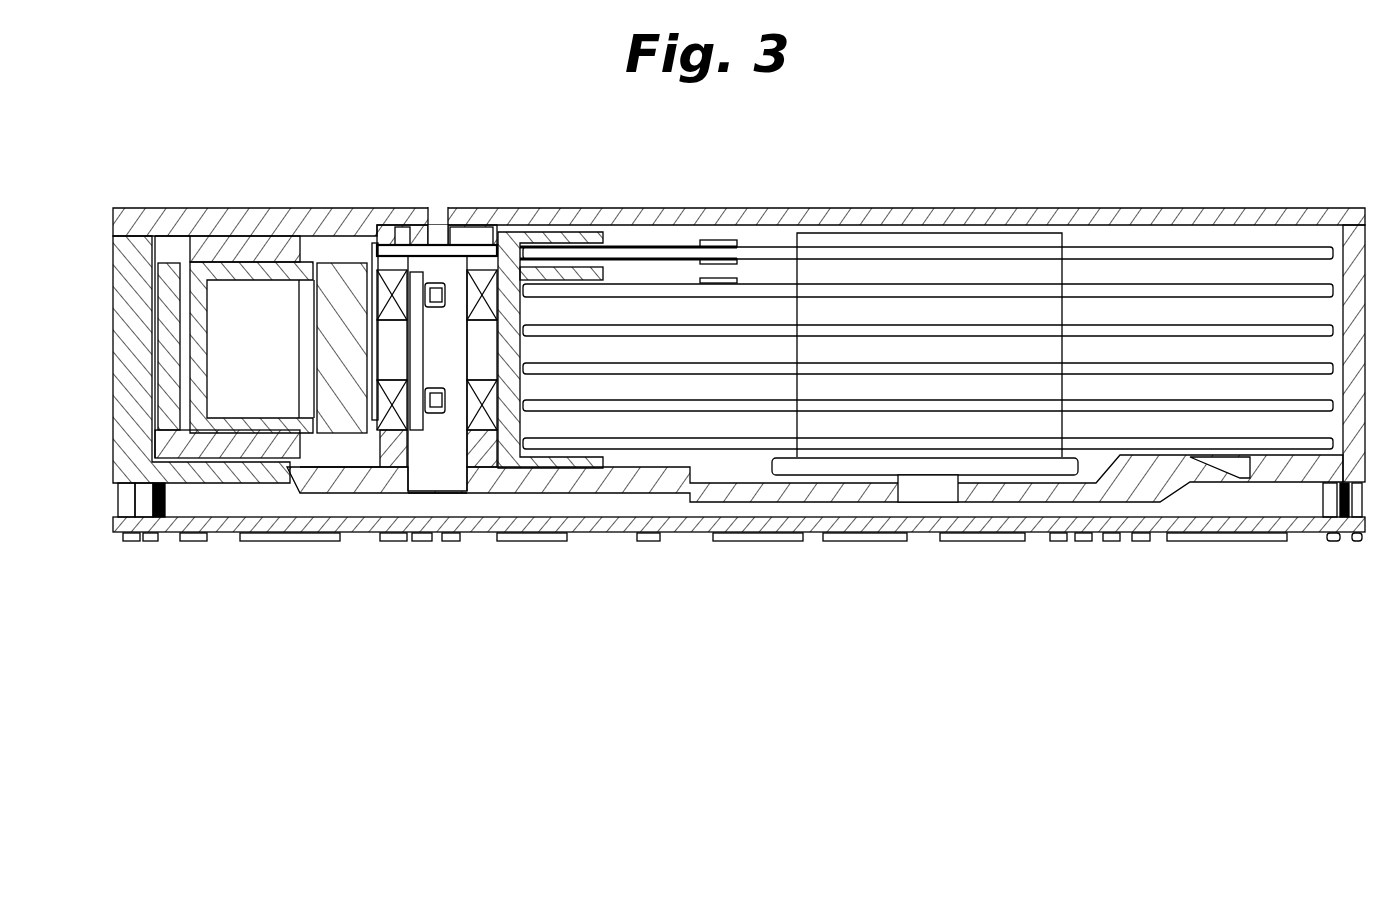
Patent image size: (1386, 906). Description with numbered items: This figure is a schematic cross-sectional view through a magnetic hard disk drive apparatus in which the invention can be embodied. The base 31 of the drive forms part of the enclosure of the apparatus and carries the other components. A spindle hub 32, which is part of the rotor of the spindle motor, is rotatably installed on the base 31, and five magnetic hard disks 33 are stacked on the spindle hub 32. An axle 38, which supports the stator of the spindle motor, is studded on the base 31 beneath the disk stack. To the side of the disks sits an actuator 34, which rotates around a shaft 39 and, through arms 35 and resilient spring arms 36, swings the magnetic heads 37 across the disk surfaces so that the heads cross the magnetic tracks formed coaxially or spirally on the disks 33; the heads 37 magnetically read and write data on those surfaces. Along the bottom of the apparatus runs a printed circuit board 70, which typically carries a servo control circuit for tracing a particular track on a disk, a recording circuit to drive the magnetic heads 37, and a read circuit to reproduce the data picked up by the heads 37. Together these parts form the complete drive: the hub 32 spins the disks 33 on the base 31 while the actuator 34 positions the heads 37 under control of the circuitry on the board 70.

The base 31 is at (688, 494).
The spindle hub 32 is at (1020, 273).
The magnetic hard disks 33 is at (1168, 245).
The actuator 34 is at (337, 236).
The arms 35 is at (590, 231).
The spring arms 36 is at (667, 237).
The magnetic heads 37 is at (698, 228).
The axle 38 is at (924, 490).
The shaft 39 is at (446, 482).
The printed circuit board 70 is at (218, 534).